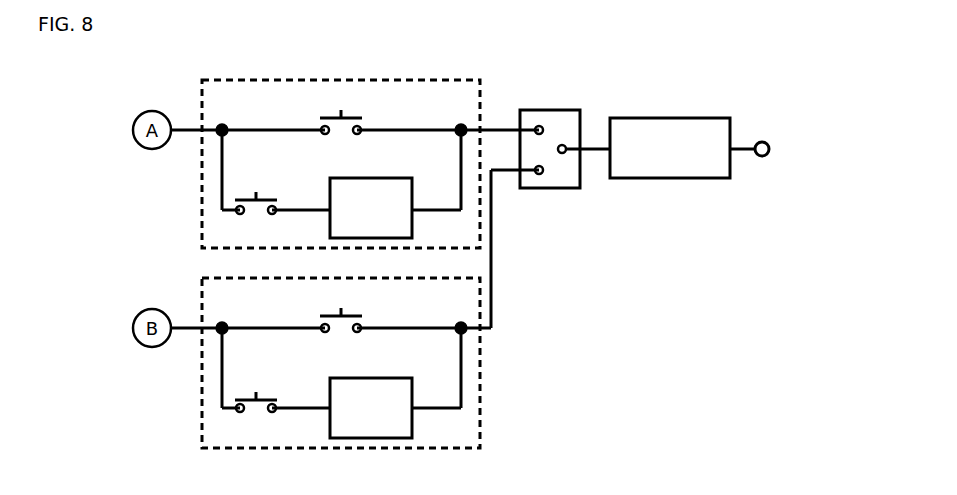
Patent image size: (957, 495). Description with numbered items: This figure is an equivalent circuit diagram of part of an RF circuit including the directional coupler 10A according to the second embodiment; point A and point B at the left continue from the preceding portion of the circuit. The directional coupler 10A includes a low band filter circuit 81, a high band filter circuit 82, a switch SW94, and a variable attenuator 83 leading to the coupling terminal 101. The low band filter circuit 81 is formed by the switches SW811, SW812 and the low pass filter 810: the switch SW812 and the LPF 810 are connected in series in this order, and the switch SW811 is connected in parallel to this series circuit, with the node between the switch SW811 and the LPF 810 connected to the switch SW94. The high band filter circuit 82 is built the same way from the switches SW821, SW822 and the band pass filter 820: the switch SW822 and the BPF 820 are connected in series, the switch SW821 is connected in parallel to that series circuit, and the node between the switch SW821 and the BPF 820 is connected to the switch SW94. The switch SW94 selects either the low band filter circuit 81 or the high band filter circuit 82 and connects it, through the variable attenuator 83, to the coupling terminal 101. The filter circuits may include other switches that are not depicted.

The directional coupler 10A is at (630, 80).
The low band filter circuit 81 is at (437, 78).
The high band filter circuit 82 is at (452, 450).
The variable attenuator 83 is at (700, 118).
The low pass filter 810 is at (400, 168).
The band pass filter 820 is at (398, 368).
The coupling terminal 101 is at (763, 140).
The switch SW811 is at (339, 112).
The switch SW812 is at (256, 193).
The switch SW821 is at (339, 310).
The switch SW822 is at (256, 391).
The switch SW94 is at (550, 139).